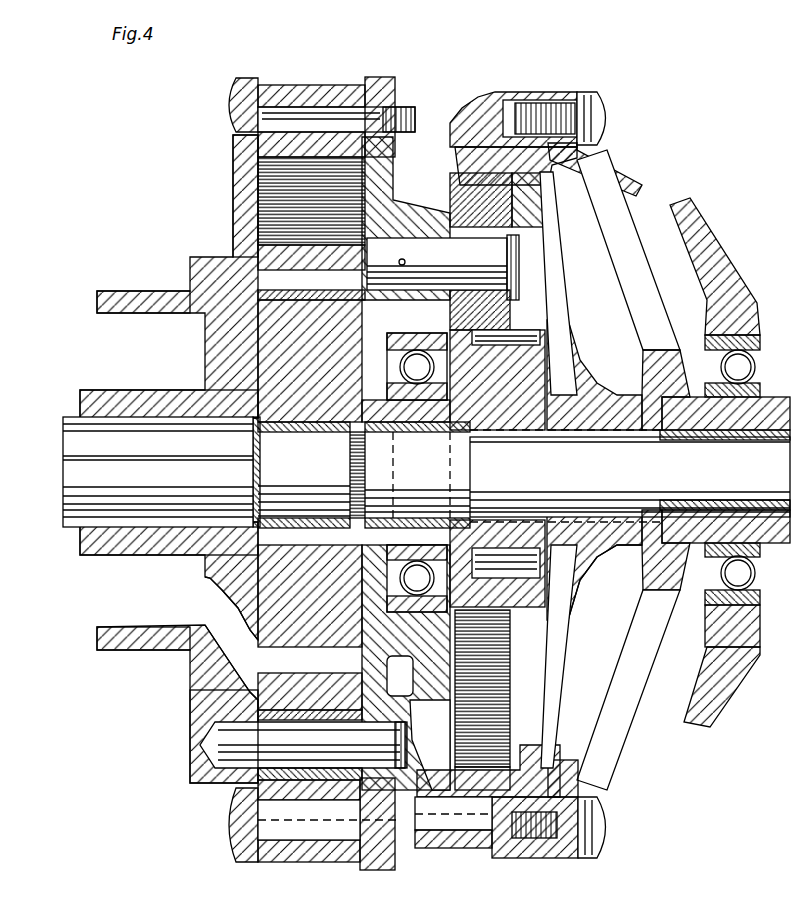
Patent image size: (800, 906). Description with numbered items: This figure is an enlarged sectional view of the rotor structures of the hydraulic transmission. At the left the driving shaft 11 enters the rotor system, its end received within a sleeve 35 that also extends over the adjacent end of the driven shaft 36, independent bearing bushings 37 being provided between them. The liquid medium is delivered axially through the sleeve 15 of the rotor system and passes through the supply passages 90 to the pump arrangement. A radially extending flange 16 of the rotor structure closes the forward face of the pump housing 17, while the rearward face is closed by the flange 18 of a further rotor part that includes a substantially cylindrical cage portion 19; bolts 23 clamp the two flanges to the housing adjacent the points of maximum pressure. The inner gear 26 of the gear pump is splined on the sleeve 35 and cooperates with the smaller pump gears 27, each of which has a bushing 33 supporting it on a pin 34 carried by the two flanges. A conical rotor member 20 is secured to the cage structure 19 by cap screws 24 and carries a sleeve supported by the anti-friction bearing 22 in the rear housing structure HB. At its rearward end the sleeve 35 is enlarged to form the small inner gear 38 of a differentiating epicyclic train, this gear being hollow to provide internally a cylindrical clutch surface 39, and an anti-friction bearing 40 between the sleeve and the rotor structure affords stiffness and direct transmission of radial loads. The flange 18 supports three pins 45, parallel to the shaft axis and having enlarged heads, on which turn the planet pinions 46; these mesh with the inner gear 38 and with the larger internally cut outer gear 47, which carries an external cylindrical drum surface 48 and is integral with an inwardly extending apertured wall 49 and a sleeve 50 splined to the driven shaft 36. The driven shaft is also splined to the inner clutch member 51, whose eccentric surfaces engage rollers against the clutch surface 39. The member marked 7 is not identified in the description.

The diaphragm spring plate 7 is at (563, 287).
The driving shaft 11 is at (68, 467).
The sleeve 15 is at (118, 293).
The radially extending flange 16 is at (233, 180).
The pump housing 17 is at (335, 84).
The flange 18 is at (395, 160).
The cage portion 19 is at (483, 108).
The conical rotor member 20 is at (582, 178).
The anti-friction bearing 22 is at (730, 590).
The bolts 23 is at (278, 118).
The cap screws 24 is at (592, 105).
The inner gear 26 is at (240, 303).
The pump gears 27 is at (290, 800).
The bushing 33 is at (253, 772).
The pin 34 is at (228, 740).
The sleeve 35 is at (248, 392).
The driven shaft 36 is at (364, 475).
The bearing bushings 37 is at (255, 420).
The inner gear 38 is at (508, 617).
The clutch surface 39 is at (530, 580).
The anti-friction bearing 40 is at (405, 352).
The pins 45 is at (443, 267).
The planet pinions 46 is at (492, 210).
The outer gear 47 is at (472, 697).
The drum surface 48 is at (467, 795).
The apertured wall 49 is at (540, 560).
The sleeve 50 is at (625, 547).
The inner clutch member 51 is at (560, 390).
The supply passages 90 is at (218, 614).
The rear housing structure HB is at (690, 207).